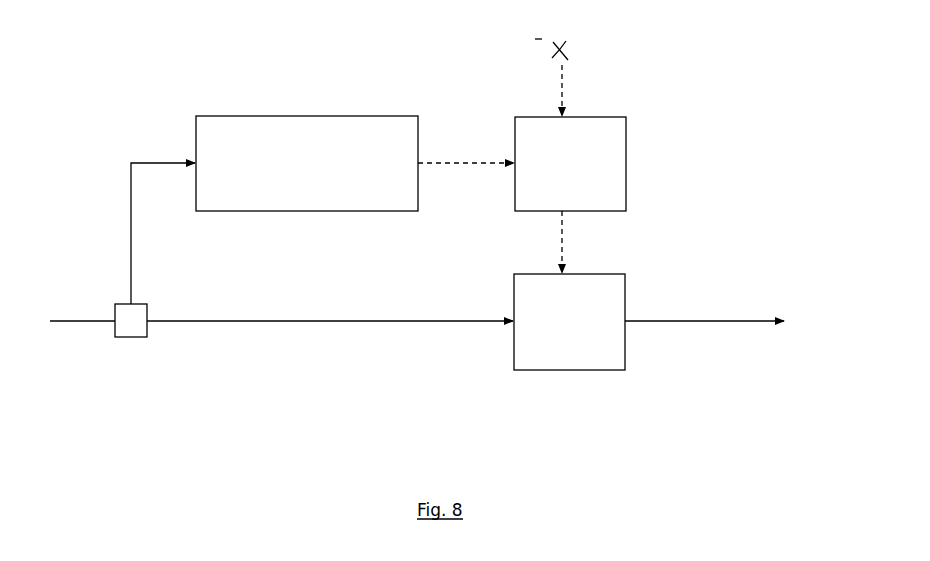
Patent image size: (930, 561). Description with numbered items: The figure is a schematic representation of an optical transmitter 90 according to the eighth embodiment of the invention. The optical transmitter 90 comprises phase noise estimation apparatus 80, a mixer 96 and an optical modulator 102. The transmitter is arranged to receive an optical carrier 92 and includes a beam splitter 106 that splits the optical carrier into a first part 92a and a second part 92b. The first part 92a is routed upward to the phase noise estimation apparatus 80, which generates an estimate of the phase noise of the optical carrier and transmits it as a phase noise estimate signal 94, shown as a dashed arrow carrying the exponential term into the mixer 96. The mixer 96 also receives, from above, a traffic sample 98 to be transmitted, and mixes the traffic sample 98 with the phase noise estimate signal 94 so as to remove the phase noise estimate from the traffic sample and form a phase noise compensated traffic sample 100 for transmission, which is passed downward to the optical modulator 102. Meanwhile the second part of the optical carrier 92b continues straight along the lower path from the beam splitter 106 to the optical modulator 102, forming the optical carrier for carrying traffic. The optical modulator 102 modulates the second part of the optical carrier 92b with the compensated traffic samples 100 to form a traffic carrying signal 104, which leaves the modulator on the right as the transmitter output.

The optical transmitter 90 is at (197, 75).
The phase noise estimation apparatus 80 is at (318, 133).
The optical carrier 92 is at (75, 323).
The first part of the optical carrier 92a is at (131, 220).
The second part of the optical carrier 92b is at (220, 323).
The phase noise estimate signal 94 is at (459, 162).
The mixer 96 is at (613, 150).
The traffic sample 98 is at (568, 82).
The phase noise compensated traffic sample 100 is at (565, 243).
The optical modulator 102 is at (566, 363).
The traffic carrying signal 104 is at (713, 325).
The beam splitter 106 is at (133, 337).